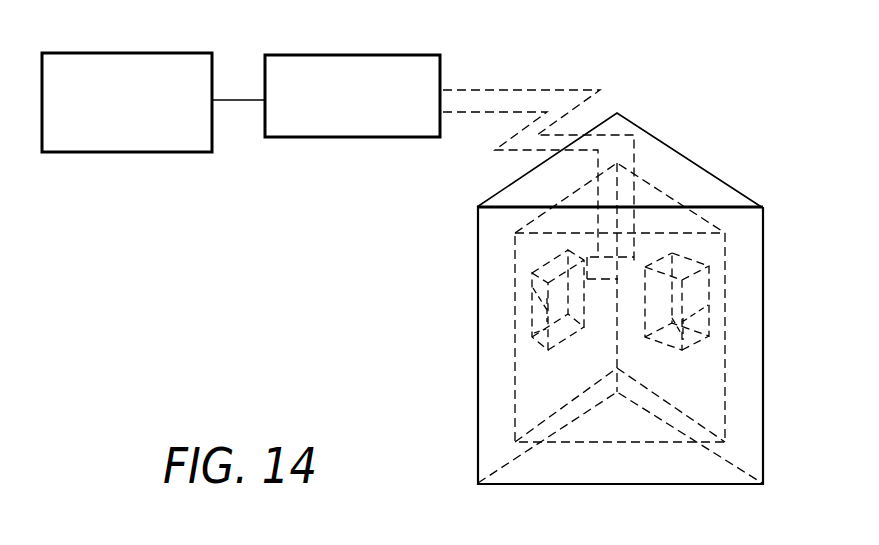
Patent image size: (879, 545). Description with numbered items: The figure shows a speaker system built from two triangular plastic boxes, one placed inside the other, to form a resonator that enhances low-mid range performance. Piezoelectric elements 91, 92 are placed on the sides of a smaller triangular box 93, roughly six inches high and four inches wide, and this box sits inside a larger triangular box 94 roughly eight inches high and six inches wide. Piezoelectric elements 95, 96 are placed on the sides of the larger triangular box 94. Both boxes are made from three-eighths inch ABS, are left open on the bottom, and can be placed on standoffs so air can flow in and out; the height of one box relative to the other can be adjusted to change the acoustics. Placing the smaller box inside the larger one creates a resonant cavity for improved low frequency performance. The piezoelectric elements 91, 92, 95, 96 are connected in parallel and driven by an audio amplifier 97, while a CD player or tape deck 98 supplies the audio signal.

The CD player or tape deck 98 is at (137, 53).
The audio amplifier 97 is at (340, 55).
The larger triangular box 94 is at (727, 180).
The triangular box 93 is at (725, 260).
The piezoelectric element 95 is at (490, 320).
The piezoelectric element 92 is at (548, 342).
The piezoelectric element 96 is at (731, 323).
The piezoelectric element 91 is at (682, 350).